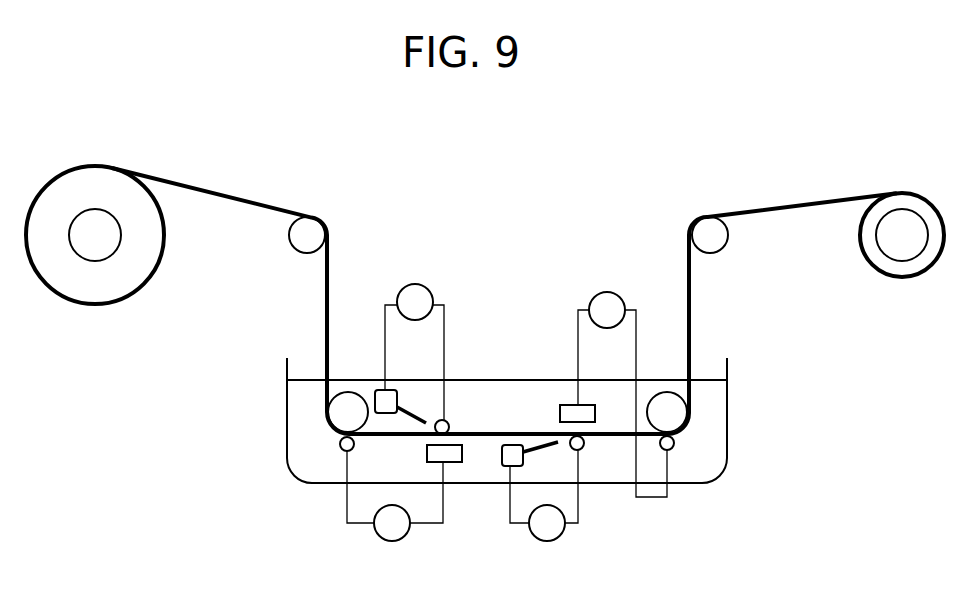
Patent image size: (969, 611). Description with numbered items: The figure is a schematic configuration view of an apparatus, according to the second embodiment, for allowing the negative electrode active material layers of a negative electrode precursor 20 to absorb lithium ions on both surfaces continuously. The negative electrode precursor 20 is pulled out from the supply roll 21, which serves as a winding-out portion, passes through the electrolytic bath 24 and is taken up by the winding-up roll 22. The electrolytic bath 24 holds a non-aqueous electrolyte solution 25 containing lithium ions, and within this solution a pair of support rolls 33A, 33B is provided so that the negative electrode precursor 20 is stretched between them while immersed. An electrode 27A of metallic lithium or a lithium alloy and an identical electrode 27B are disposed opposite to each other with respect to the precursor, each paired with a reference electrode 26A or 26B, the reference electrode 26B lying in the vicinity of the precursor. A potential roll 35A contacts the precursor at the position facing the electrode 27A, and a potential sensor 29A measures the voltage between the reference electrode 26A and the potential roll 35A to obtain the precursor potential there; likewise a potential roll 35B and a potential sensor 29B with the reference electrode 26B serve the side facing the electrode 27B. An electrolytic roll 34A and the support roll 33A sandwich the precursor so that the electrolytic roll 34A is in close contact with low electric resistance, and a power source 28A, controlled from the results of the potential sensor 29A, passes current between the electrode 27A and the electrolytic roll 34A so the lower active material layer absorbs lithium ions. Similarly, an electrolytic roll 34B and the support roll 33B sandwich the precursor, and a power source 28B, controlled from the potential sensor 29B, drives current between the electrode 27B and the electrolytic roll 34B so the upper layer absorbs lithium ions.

The negative electrode precursor 20 is at (253, 200).
The supply roll 21 is at (110, 230).
The winding-up roll 22 is at (888, 225).
The electrolytic bath 24 is at (288, 445).
The non-aqueous electrolyte solution 25 is at (713, 442).
The reference electrode 26A is at (376, 392).
The reference electrode 26B is at (503, 466).
The electrode 27A is at (457, 445).
The electrode 27B is at (570, 404).
The power source 28A is at (375, 533).
The power source 28B is at (592, 295).
The potential sensor 29A is at (403, 282).
The potential sensor 29B is at (565, 535).
The support roll 33A is at (343, 410).
The support roll 33B is at (677, 417).
The electrolytic roll 34A is at (343, 449).
The electrolytic roll 34B is at (672, 451).
The potential roll 35A is at (434, 433).
The potential roll 35B is at (582, 449).